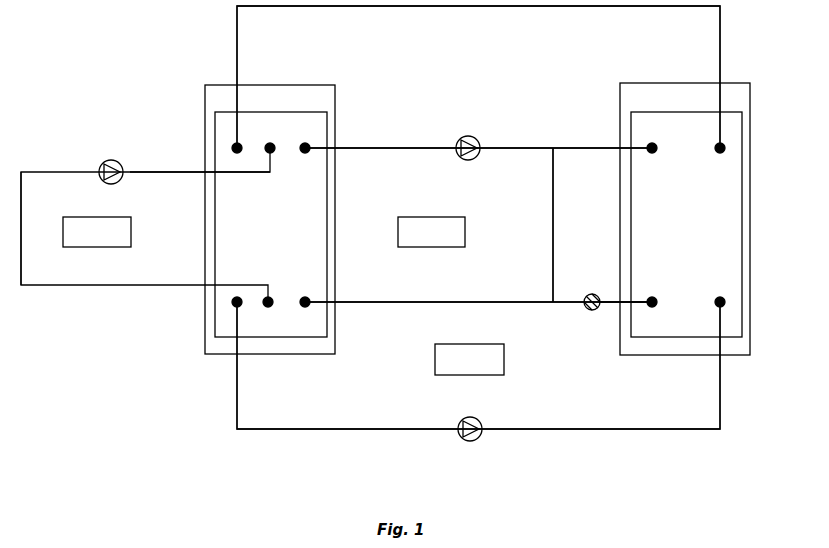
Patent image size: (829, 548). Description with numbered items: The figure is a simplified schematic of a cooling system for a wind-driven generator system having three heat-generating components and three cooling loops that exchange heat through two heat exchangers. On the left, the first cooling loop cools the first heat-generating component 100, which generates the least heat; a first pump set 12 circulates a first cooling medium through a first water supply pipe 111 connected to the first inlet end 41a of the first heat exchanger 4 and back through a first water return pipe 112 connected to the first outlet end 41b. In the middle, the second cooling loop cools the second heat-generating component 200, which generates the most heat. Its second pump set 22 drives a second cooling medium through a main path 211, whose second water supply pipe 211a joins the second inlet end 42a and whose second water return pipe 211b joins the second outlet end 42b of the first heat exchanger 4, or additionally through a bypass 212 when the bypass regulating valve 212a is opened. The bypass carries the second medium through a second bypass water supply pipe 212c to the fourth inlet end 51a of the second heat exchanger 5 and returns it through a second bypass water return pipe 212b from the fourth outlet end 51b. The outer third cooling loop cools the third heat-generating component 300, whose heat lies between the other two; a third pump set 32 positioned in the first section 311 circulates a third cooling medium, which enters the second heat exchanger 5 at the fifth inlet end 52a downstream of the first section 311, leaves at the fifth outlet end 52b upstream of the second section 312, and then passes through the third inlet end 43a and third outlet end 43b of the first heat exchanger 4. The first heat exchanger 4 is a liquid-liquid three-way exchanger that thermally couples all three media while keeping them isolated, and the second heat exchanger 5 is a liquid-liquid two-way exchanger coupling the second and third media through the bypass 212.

The first water supply pipe 111 is at (27, 225).
The first water return pipe 112 is at (188, 173).
The first pump set 12 is at (118, 160).
The first heat-generating component 100 is at (97, 232).
The main path 211 is at (553, 233).
The second water supply pipe 211a is at (376, 147).
The second water return pipe 211b is at (397, 301).
The bypass 212 is at (566, 304).
The bypass regulating valve 212a is at (587, 311).
The second bypass water return pipe 212b is at (605, 149).
The second bypass water supply pipe 212c is at (612, 299).
The second pump set 22 is at (478, 138).
The second heat-generating component 200 is at (431, 232).
The first section 311 is at (298, 428).
The second section 312 is at (450, 7).
The third pump set 32 is at (480, 418).
The third heat-generating component 300 is at (469, 359).
The first heat exchanger 4 is at (296, 74).
The first inlet end 41a is at (268, 300).
The first outlet end 41b is at (270, 150).
The second inlet end 42a is at (307, 146).
The second outlet end 42b is at (306, 304).
The third inlet end 43a is at (236, 305).
The third outlet end 43b is at (235, 146).
The second heat exchanger 5 is at (678, 76).
The fourth inlet end 51a is at (653, 300).
The fourth outlet end 51b is at (653, 150).
The fifth inlet end 52a is at (721, 300).
The fifth outlet end 52b is at (721, 150).